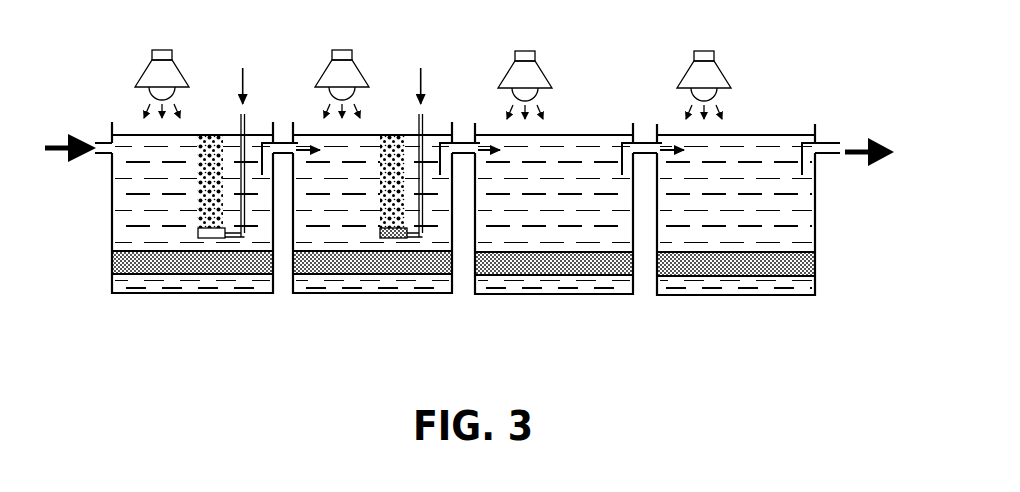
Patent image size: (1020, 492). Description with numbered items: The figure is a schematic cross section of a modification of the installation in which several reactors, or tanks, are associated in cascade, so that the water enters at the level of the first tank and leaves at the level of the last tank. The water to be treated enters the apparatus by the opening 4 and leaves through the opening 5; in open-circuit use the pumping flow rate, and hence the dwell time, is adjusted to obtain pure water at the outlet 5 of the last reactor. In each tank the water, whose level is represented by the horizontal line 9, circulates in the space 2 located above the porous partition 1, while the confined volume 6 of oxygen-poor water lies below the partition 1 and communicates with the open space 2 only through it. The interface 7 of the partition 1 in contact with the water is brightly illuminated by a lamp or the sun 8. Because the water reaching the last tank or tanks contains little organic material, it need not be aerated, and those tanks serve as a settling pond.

The porous partition 1 is at (216, 262).
The space above the partition 2 is at (145, 231).
The inlet opening 4 is at (90, 143).
The outlet opening 5 is at (839, 151).
The confined volume 6 is at (259, 284).
The interface wall of the partition 7 is at (173, 276).
The lamp or sun 8 is at (171, 78).
The water level line 9 is at (207, 135).